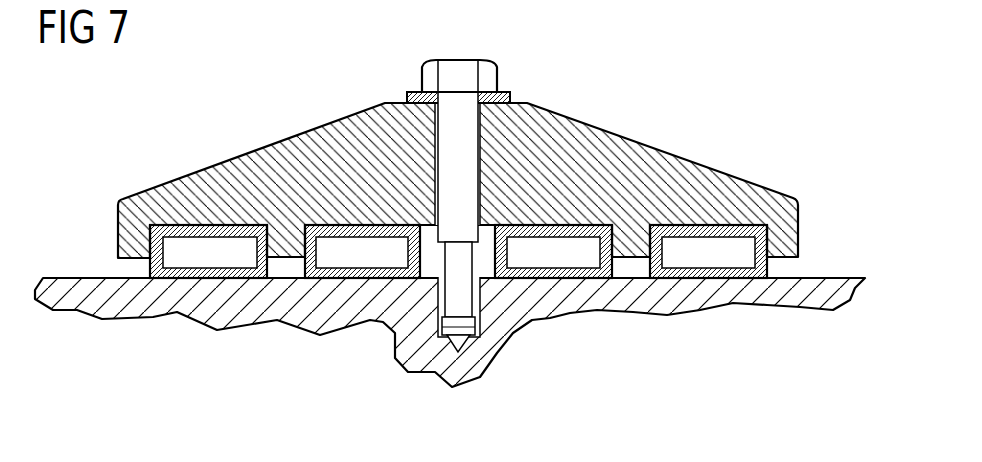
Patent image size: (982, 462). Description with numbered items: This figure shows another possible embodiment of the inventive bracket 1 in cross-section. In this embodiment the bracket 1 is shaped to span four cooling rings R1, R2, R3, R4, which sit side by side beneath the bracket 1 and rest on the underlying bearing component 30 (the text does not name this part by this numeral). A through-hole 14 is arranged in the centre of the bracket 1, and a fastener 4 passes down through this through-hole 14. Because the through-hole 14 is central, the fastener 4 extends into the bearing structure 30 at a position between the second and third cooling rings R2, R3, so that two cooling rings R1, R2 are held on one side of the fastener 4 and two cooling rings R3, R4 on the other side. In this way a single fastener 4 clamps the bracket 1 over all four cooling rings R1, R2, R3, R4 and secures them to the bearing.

The bracket 1 is at (257, 127).
The fastener 4 is at (445, 153).
The through-hole 14 is at (483, 140).
The base plate 30 is at (830, 292).
The cooling ring R1 is at (212, 252).
The cooling ring R2 is at (362, 252).
The cooling ring R3 is at (552, 252).
The cooling ring R4 is at (707, 252).